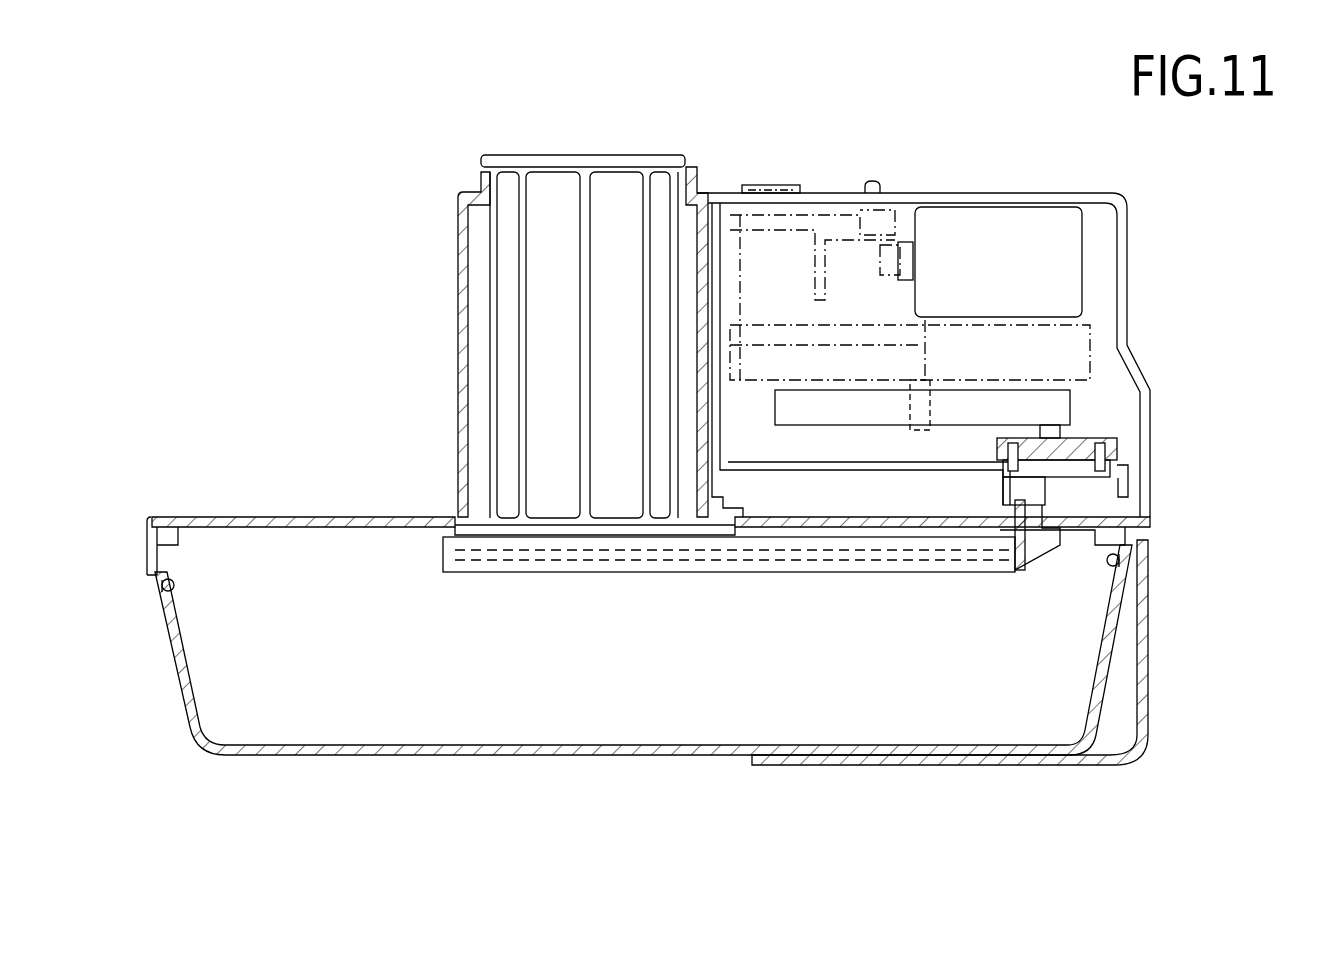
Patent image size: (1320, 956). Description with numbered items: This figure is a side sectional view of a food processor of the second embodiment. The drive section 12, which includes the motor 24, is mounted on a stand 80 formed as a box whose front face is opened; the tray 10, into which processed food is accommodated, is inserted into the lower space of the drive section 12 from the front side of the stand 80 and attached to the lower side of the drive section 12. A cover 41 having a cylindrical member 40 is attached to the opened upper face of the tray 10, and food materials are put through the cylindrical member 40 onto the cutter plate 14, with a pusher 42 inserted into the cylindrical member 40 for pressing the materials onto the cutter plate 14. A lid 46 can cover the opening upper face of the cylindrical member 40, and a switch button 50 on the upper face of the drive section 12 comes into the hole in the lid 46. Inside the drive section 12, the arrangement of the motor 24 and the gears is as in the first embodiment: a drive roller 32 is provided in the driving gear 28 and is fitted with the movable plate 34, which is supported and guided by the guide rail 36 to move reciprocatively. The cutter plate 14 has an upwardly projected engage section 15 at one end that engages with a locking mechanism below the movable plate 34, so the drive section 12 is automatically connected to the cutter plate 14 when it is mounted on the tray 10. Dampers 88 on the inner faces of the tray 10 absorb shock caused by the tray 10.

The tray 10 is at (437, 757).
The drive section 12 is at (906, 190).
The cutter plate 14 is at (565, 560).
The engage section 15 is at (1045, 535).
The motor 24 is at (1000, 215).
The driving gear 28 is at (1045, 400).
The drive roller 32 is at (1075, 440).
The movable plate 34 is at (1110, 460).
The guide rail 36 is at (1120, 490).
The cylindrical member 40 is at (460, 330).
The cover 41 is at (283, 517).
The pusher 42 is at (495, 237).
The lid 46 is at (721, 193).
The switch button 50 is at (779, 190).
The stand 80 is at (953, 765).
The dampers 88 is at (168, 582).